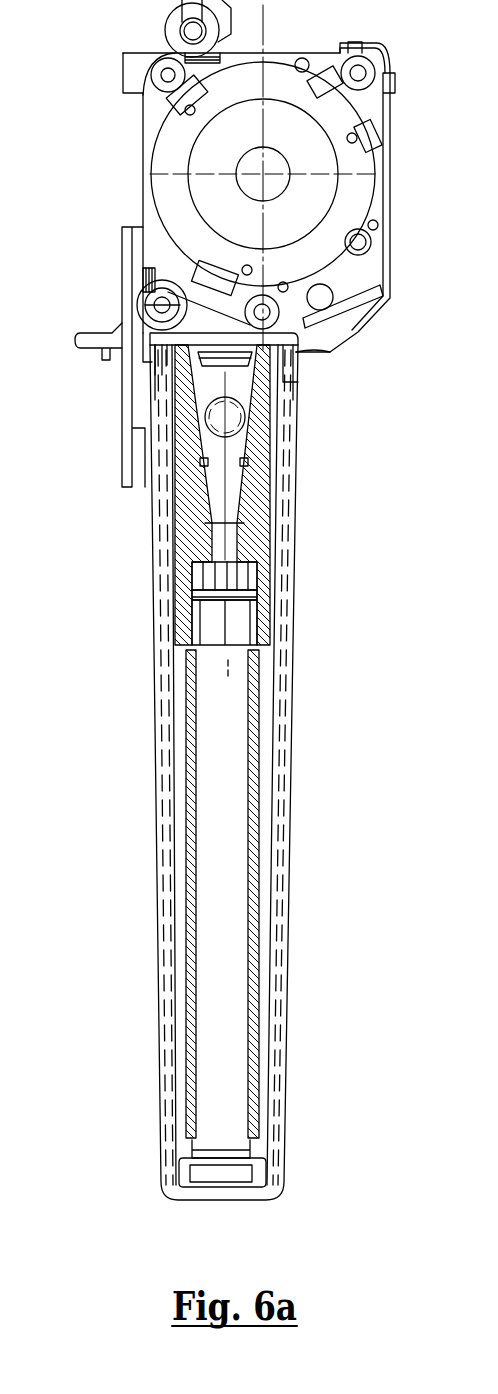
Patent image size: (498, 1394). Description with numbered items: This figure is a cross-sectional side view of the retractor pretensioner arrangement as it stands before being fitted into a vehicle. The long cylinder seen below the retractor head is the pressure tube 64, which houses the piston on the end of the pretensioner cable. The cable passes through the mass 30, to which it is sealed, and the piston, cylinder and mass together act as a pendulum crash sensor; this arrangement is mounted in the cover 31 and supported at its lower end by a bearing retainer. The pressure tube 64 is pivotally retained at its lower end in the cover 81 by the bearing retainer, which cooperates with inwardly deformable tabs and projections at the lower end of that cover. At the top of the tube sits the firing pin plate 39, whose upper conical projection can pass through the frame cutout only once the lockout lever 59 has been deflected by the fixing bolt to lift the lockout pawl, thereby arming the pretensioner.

The mass 30 is at (263, 548).
The cover 31 is at (232, 595).
The firing pin plate 39 is at (260, 350).
The lockout lever 59 is at (172, 347).
The pressure tube 64 is at (228, 850).
The cover 81 is at (290, 718).